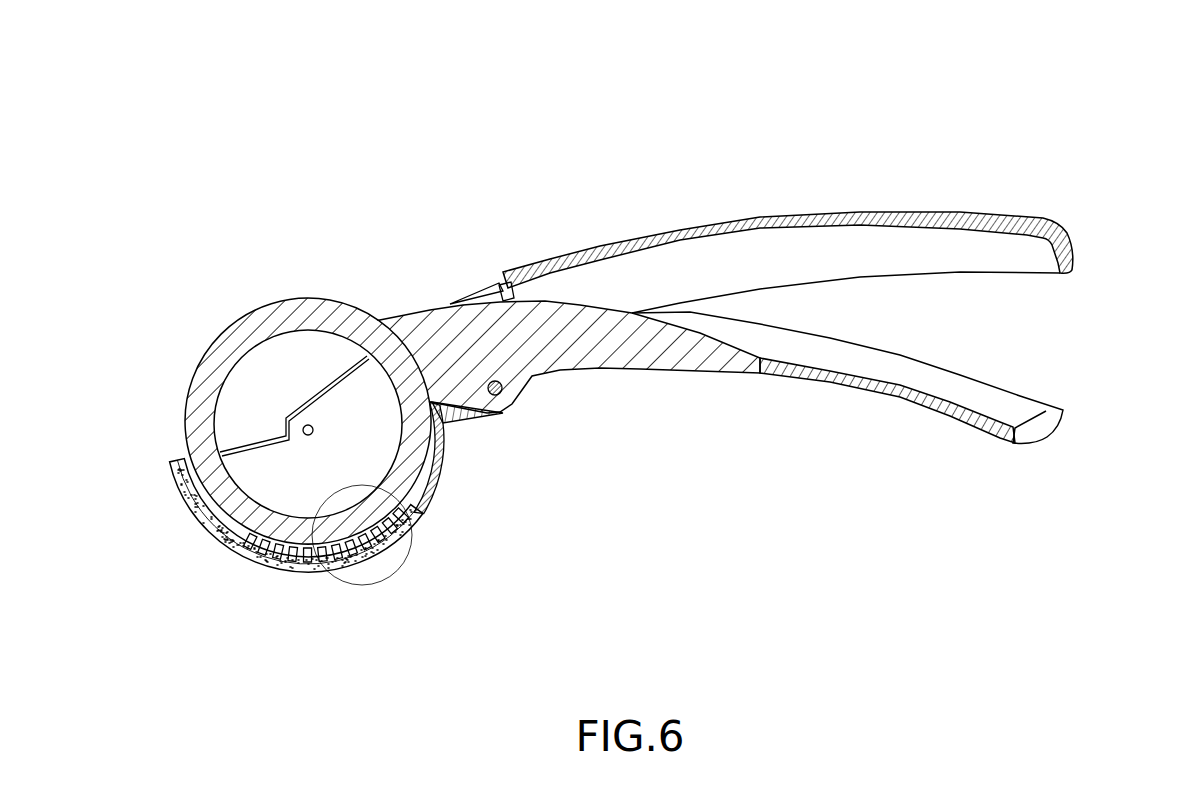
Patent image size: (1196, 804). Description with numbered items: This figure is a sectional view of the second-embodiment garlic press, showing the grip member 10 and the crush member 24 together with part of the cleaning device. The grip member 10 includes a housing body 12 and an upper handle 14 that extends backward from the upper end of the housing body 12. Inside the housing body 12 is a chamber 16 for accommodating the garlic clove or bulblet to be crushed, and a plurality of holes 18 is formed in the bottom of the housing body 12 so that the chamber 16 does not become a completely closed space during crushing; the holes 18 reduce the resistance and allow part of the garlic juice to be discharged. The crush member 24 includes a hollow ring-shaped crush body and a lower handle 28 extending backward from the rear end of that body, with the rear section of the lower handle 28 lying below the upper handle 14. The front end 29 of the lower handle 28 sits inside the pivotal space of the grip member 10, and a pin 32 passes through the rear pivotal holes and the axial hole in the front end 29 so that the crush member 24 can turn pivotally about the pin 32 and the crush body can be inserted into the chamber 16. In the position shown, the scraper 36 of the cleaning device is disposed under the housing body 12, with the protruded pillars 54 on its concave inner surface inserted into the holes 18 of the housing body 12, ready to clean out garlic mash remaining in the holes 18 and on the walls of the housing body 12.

The grip member 10 is at (1078, 242).
The housing body 12 is at (445, 432).
The upper handle 14 is at (862, 209).
The chamber 16 is at (432, 488).
The holes 18 is at (388, 553).
The crush member 24 is at (1078, 412).
The lower handle 28 is at (885, 398).
The front end of the lower handle 29 is at (413, 345).
The pin 32 is at (503, 393).
The scraper 36 is at (200, 520).
The protruded pillars 54 is at (287, 568).